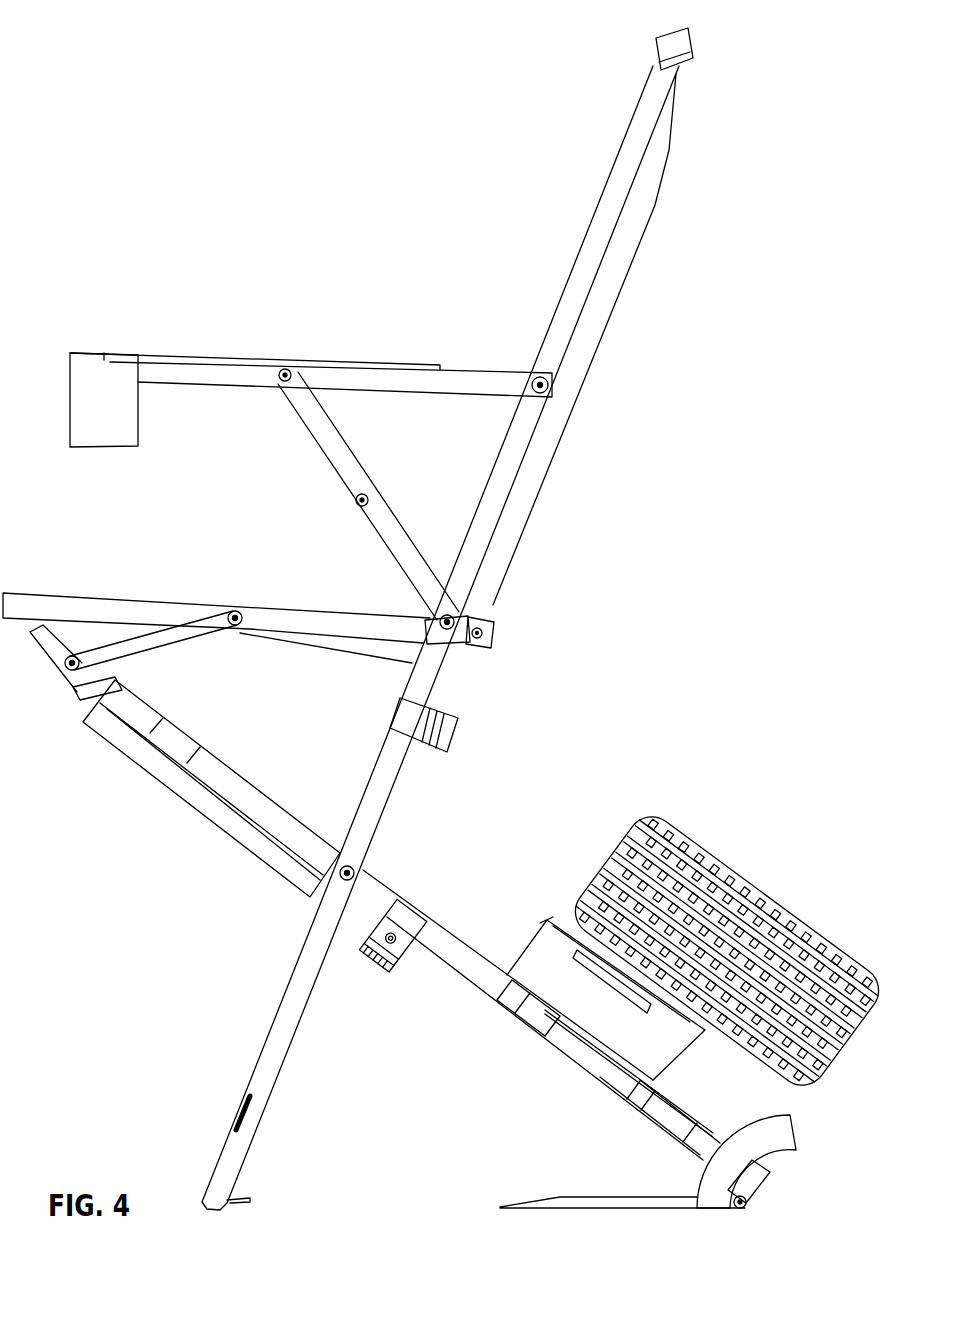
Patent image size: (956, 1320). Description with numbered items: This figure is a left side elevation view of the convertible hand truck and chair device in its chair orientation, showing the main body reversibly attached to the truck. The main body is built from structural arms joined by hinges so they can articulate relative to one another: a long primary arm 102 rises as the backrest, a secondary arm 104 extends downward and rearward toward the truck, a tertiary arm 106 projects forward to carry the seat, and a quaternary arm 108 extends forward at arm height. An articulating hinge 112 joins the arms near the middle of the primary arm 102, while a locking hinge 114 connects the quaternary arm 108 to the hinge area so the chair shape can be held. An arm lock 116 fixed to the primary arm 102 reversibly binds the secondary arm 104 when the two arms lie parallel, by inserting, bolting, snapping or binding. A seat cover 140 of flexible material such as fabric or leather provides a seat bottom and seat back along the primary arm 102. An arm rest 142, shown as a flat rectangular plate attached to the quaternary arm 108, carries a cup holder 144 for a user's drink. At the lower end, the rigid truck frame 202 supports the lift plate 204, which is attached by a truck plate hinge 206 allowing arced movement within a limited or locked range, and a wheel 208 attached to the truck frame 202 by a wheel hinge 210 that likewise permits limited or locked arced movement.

The primary arm 102 is at (643, 123).
The secondary arm 104 is at (455, 955).
The tertiary arm 106 is at (118, 602).
The quaternary arm 108 is at (487, 375).
The articulating hinge 112 is at (496, 616).
The locking hinge 114 is at (335, 470).
The arm lock 116 is at (420, 905).
The seat cover 140 is at (598, 315).
The arm rest 142 is at (178, 360).
The cup holder 144 is at (95, 378).
The truck frame 202 is at (600, 1020).
The lift plate 204 is at (573, 1203).
The truck plate hinge 206 is at (795, 1150).
The wheel 208 is at (697, 850).
The wheel hinge 210 is at (550, 920).